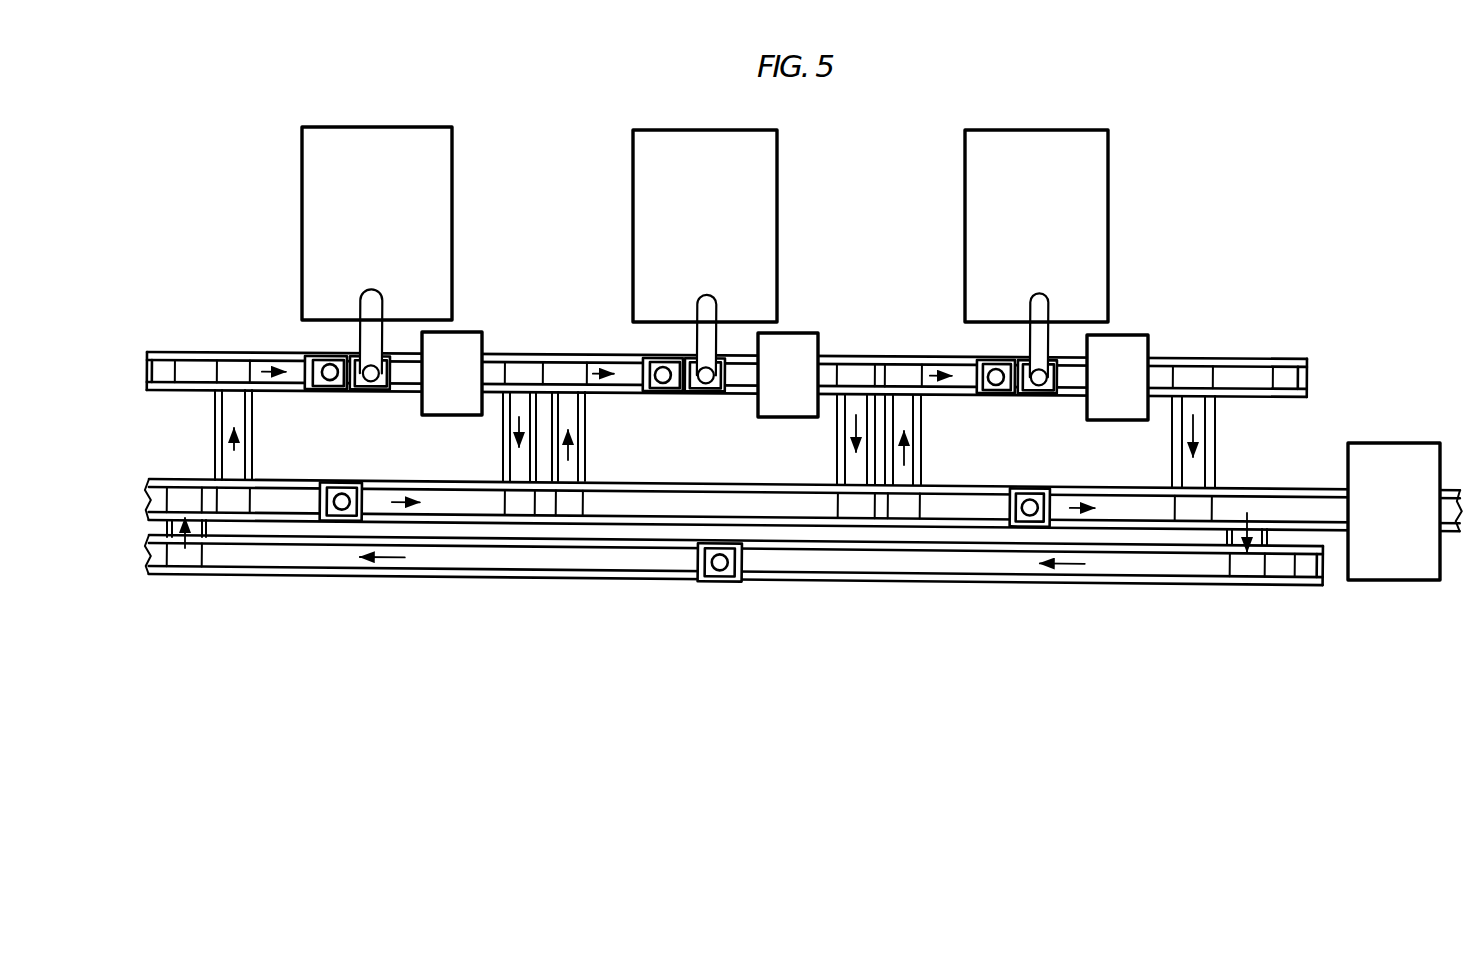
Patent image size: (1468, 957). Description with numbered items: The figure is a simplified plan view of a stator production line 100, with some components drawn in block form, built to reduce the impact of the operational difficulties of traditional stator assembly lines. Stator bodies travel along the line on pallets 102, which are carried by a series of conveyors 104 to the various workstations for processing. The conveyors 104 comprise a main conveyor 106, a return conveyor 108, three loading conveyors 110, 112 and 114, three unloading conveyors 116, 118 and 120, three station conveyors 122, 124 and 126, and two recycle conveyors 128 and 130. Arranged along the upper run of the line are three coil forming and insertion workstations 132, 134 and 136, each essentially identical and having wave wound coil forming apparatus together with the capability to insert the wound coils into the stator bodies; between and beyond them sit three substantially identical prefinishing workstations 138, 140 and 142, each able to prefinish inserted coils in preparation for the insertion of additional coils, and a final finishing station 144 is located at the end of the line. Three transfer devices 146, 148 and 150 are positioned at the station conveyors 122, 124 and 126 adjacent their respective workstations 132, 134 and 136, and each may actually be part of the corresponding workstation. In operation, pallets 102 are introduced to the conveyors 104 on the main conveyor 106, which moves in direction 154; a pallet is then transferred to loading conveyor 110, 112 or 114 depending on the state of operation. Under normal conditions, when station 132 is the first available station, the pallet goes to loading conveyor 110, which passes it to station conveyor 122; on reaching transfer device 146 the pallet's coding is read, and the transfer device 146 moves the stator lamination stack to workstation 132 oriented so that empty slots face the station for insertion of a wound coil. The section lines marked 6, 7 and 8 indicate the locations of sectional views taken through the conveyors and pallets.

The stator production line 100 is at (1185, 43).
The pallet 102 is at (707, 575).
The conveyors 104 is at (1340, 397).
The main conveyor 106 is at (690, 512).
The return conveyor 108 is at (978, 575).
The loading conveyor 110 is at (230, 412).
The loading conveyor 112 is at (582, 431).
The loading conveyor 114 is at (908, 468).
The unloading conveyor 116 is at (403, 503).
The unloading conveyor 118 is at (850, 478).
The unloading conveyor 120 is at (1197, 470).
The station conveyor 122 is at (282, 362).
The station conveyor 124 is at (604, 362).
The station conveyor 126 is at (940, 365).
The recycle conveyor 128 is at (1250, 572).
The recycle conveyor 130 is at (187, 560).
The coil forming and insertion workstation 132 is at (435, 127).
The coil forming and insertion workstation 134 is at (720, 130).
The coil forming and insertion workstation 136 is at (1035, 130).
The prefinishing workstation 138 is at (482, 340).
The prefinishing workstation 140 is at (800, 333).
The prefinishing workstation 142 is at (1135, 335).
The final finishing station 144 is at (1370, 443).
The transfer device 146 is at (376, 290).
The transfer device 148 is at (710, 292).
The transfer device 150 is at (1040, 293).
The direction 154 is at (371, 476).
The section line 6- 6 is at (308, 523).
The section line 7- 7 is at (355, 88).
The section line 8- 8 is at (458, 292).